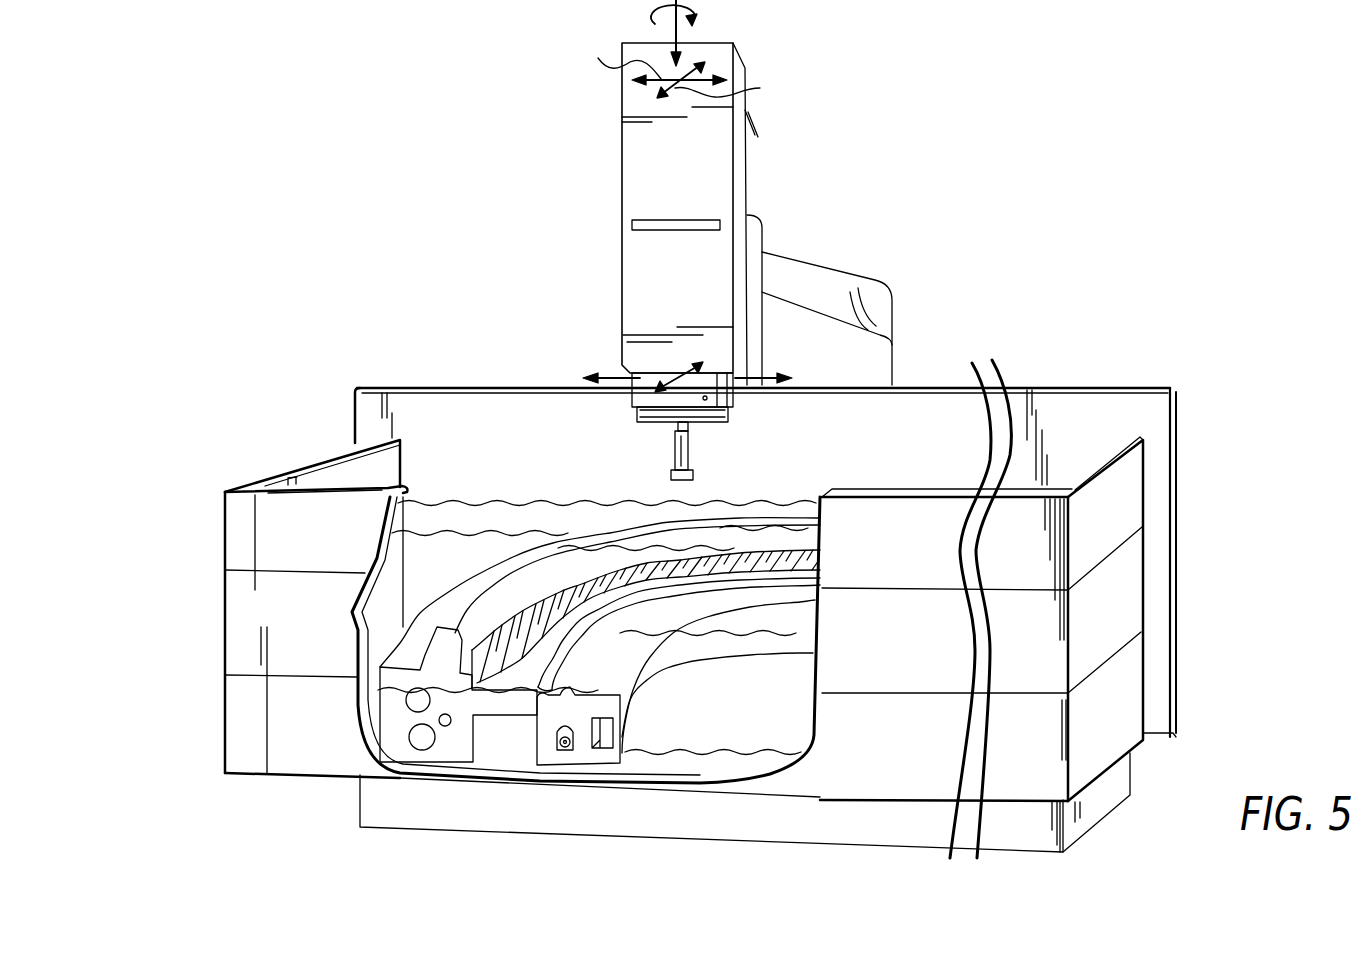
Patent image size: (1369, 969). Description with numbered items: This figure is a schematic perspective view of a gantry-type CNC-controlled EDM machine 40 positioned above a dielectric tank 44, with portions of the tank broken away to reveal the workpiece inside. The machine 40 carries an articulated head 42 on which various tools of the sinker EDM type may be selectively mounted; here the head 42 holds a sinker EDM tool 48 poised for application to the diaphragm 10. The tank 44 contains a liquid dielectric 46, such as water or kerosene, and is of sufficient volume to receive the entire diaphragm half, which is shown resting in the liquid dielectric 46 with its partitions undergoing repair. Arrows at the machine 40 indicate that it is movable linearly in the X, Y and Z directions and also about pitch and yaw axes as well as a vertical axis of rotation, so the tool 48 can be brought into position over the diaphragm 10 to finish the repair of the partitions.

The diaphragm 10 is at (700, 677).
The gantry-type CNC-controlled EDM machine 40 is at (568, 180).
The articulated head 42 is at (636, 401).
The tank 44 is at (285, 638).
The liquid dielectric 46 is at (450, 550).
The sinker EDM tool 48 is at (688, 448).